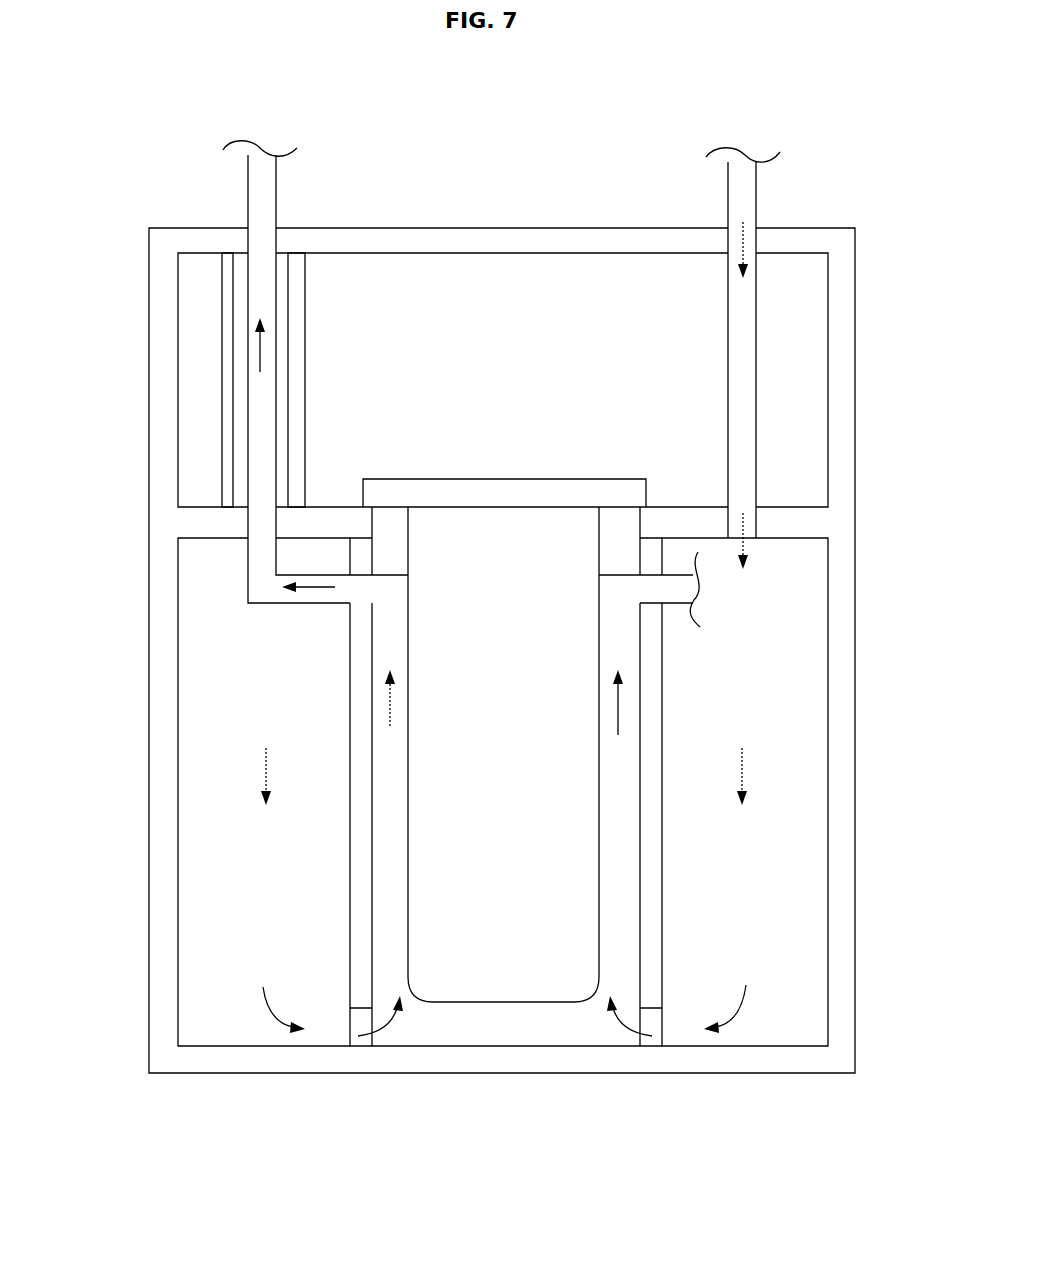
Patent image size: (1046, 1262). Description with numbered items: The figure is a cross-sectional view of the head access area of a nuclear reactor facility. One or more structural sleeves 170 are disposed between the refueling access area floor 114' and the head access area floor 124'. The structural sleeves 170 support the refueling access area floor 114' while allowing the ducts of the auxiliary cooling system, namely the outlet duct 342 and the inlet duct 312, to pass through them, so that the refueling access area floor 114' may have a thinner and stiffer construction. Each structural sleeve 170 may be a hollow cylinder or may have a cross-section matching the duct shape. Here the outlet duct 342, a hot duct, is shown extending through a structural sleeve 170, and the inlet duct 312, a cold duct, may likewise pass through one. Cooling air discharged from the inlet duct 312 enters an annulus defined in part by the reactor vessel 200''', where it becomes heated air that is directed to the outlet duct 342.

The outlet duct 342 is at (248, 195).
The inlet duct 312 is at (728, 201).
The refueling access area floor 114' is at (543, 605).
The head access area floor 124' is at (562, 734).
The structural sleeve 170 is at (225, 383).
The reactor vessel 200''' is at (503, 843).